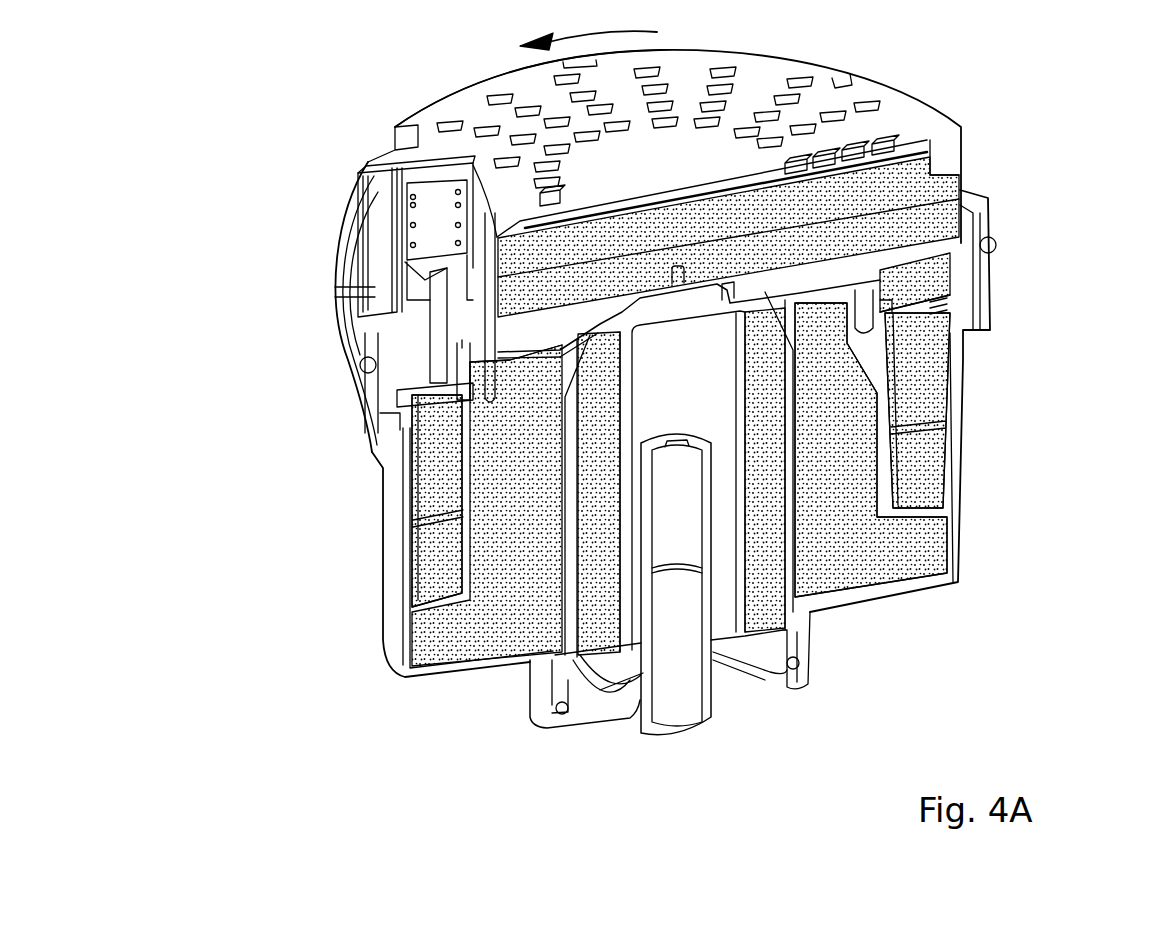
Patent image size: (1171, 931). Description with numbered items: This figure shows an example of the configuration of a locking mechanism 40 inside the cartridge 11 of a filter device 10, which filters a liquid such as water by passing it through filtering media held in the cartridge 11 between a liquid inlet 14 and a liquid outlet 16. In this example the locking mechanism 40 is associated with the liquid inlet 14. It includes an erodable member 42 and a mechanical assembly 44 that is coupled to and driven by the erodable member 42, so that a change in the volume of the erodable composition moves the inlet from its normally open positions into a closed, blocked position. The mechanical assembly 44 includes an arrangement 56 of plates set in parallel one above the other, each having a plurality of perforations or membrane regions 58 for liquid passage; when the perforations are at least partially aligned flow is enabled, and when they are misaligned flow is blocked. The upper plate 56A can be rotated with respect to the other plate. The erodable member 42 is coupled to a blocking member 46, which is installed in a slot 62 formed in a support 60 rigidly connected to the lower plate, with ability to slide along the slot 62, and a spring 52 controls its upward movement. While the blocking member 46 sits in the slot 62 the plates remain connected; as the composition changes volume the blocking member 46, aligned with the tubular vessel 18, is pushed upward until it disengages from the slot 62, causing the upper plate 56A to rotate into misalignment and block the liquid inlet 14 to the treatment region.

The filter device 10 is at (1057, 155).
The cartridge 11 is at (960, 483).
The liquid inlet 14 is at (487, 102).
The liquid outlet 16 is at (680, 697).
The tubular vessel 18 is at (713, 710).
The locking mechanism 40 is at (342, 243).
The erodable member 42 is at (432, 217).
The mechanical assembly 44 is at (440, 273).
The blocking member 46 is at (345, 368).
The spring 52 is at (420, 257).
The arrangement of plates 56 is at (936, 96).
The upper plate 56A is at (878, 108).
The perforations 58 is at (800, 83).
The support 60 is at (400, 413).
The slot 62 is at (435, 333).